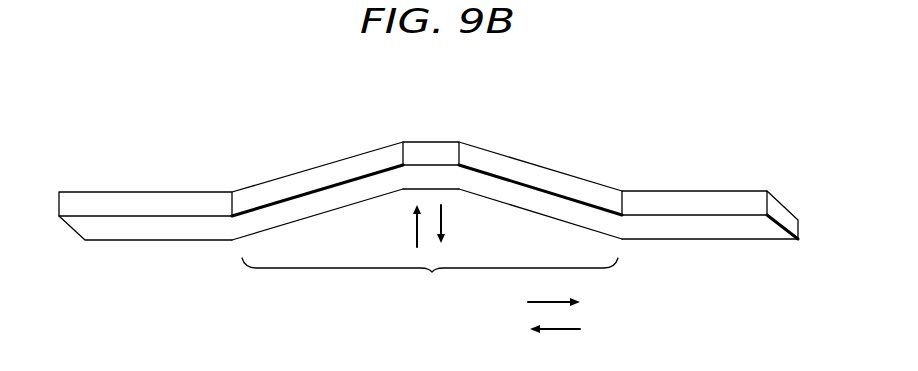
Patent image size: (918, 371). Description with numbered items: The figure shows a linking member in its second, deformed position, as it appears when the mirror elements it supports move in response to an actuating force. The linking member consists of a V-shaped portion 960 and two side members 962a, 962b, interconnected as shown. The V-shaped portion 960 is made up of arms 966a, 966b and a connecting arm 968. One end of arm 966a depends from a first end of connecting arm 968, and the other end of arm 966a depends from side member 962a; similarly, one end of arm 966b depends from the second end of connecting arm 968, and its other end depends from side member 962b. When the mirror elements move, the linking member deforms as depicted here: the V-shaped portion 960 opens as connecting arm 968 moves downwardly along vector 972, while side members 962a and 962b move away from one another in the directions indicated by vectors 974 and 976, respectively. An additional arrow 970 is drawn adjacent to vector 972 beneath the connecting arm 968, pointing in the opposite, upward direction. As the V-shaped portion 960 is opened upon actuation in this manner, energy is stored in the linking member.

The V-shaped portion 960 is at (430, 282).
The side member 962a is at (183, 198).
The side member 962b is at (705, 198).
The arm 966a is at (327, 170).
The arm 966b is at (550, 172).
The connecting arm 968 is at (438, 150).
The upward displacement arrow 970 is at (414, 228).
The vector 972 is at (445, 222).
The vector 974 is at (573, 331).
The vector 976 is at (558, 302).